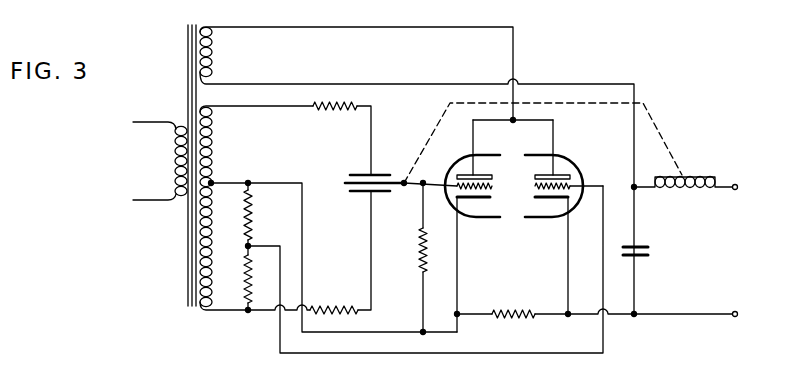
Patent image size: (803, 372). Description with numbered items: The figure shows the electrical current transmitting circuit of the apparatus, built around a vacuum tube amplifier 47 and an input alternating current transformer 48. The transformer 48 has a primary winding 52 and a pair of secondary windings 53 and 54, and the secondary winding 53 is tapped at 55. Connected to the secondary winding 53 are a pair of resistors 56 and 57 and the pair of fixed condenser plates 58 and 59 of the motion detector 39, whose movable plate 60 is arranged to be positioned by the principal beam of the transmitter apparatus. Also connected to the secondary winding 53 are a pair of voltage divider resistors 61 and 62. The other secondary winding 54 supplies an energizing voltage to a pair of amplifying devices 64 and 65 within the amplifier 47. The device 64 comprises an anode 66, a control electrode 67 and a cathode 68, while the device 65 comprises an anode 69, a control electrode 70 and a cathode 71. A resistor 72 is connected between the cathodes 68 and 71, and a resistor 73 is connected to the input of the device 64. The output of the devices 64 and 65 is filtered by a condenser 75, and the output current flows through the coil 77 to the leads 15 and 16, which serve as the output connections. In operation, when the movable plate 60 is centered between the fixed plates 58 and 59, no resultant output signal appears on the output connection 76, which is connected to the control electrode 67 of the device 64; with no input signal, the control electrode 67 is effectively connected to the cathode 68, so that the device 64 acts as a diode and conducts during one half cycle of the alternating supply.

The transformer 48 is at (170, 78).
The secondary winding 54 is at (215, 52).
The secondary winding 53 is at (214, 141).
The primary winding 52 is at (175, 158).
The tap 55 is at (212, 183).
The voltage divider resistor 61 is at (244, 218).
The voltage divider resistor 62 is at (244, 276).
The resistor 56 is at (340, 110).
The resistor 57 is at (340, 307).
The motion detector 39 is at (362, 190).
The fixed condenser plate 58 is at (377, 174).
The fixed condenser plate 59 is at (357, 193).
The movable plate 60 is at (348, 181).
The output connection 76 is at (435, 190).
The resistor 73 is at (420, 246).
The vacuum tube amplifier 47 is at (515, 225).
The amplifying device 64 is at (471, 172).
The amplifying device 65 is at (560, 172).
The anode 66 is at (463, 175).
The anode 69 is at (565, 176).
The control electrode 67 is at (455, 186).
The control electrode 70 is at (572, 188).
The cathode 68 is at (475, 200).
The cathode 71 is at (553, 200).
The resistor 72 is at (518, 312).
The condenser 75 is at (655, 252).
The coil 77 is at (696, 190).
The lead 16 is at (729, 193).
The lead 15 is at (727, 311).